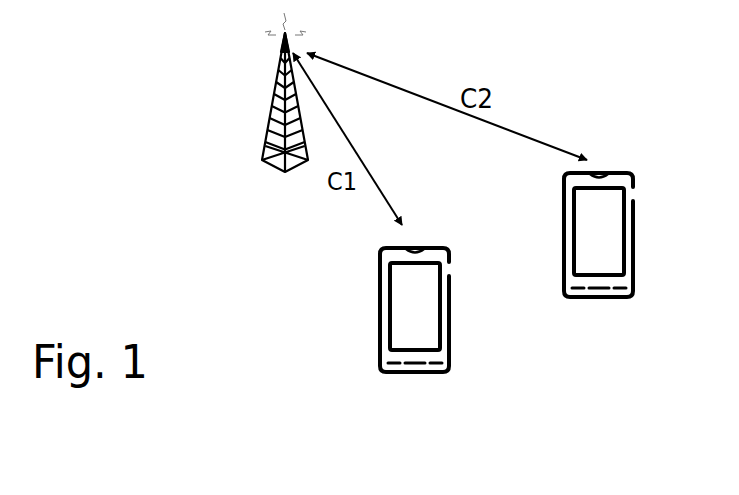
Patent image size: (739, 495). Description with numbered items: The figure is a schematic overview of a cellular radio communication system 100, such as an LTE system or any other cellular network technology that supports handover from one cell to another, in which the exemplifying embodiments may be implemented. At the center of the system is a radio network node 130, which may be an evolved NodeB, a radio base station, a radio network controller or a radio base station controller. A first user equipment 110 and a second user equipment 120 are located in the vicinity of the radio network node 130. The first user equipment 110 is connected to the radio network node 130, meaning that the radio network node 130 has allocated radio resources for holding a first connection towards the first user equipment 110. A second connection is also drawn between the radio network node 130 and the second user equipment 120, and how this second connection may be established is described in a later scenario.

The cellular radio communication system 100 is at (113, 114).
The first user equipment 110 is at (386, 310).
The second user equipment 120 is at (573, 235).
The radio network node 130 is at (261, 92).